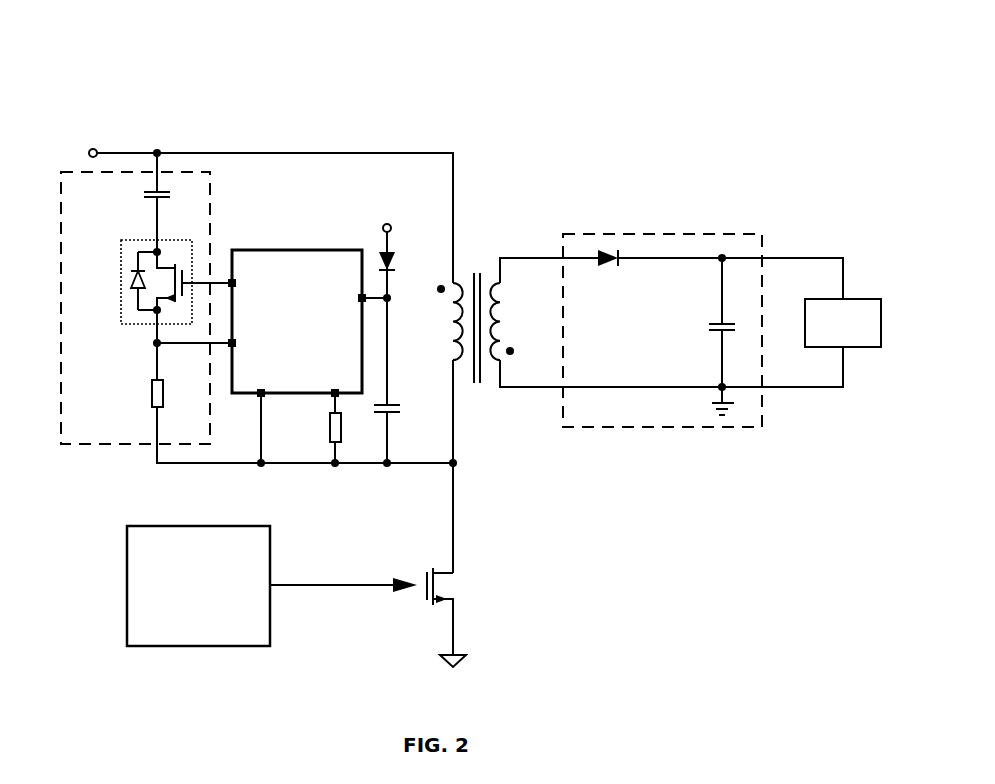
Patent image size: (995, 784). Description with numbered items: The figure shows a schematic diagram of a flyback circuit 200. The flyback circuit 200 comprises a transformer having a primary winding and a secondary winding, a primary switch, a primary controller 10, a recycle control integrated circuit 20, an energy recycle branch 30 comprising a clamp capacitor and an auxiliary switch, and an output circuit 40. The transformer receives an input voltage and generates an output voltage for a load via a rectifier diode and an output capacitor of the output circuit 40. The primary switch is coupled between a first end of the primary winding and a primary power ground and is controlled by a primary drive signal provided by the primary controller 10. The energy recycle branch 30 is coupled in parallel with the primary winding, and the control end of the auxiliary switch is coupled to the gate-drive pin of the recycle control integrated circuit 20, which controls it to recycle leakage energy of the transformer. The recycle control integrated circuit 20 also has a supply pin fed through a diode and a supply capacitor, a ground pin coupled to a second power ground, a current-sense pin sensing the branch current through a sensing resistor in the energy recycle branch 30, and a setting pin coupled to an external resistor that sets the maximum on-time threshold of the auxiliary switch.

The flyback circuit 200 is at (452, 82).
The primary controller 10 is at (127, 585).
The recycle control integrated circuit 20 is at (299, 250).
The energy recycle branch 30 is at (80, 444).
The output circuit 40 is at (598, 430).